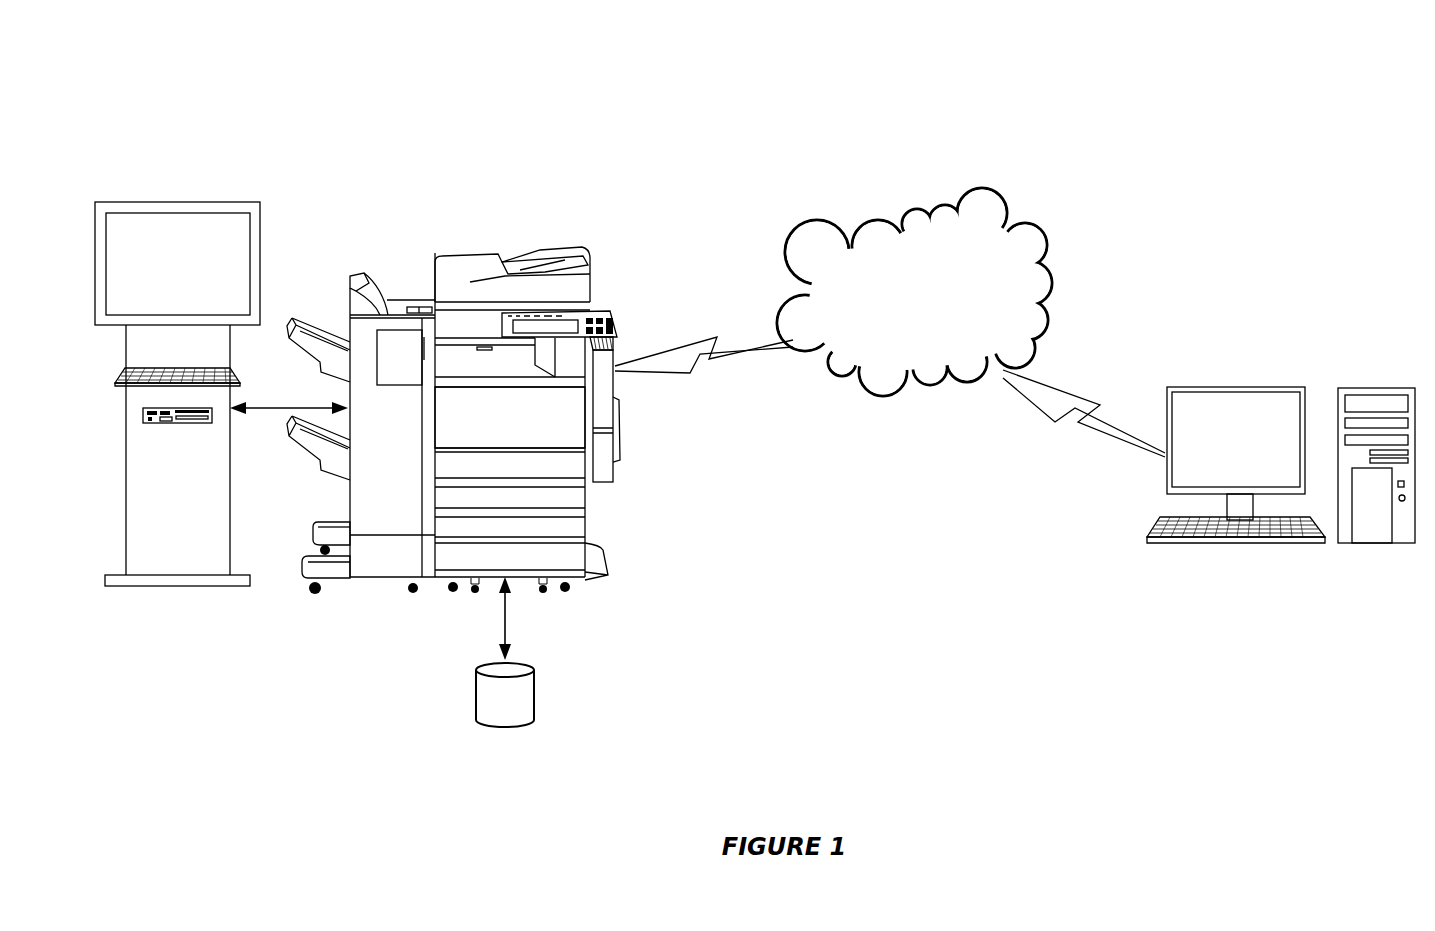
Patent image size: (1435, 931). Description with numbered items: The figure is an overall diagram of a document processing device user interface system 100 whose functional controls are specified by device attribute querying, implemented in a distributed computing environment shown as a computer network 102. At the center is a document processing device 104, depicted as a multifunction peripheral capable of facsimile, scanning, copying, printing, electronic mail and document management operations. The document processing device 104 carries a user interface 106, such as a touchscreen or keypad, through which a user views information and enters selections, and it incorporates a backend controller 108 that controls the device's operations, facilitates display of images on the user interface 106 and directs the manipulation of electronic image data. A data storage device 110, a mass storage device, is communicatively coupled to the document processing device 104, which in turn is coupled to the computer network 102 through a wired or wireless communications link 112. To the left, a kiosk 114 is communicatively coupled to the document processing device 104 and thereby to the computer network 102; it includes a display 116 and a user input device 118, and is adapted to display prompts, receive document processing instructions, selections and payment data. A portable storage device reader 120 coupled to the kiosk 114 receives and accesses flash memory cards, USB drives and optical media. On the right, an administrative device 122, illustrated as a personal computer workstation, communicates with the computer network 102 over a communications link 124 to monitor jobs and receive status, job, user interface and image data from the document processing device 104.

The document processing device user interface system 100 is at (709, 122).
The computer network 102 is at (981, 189).
The document processing device 104 is at (512, 259).
The user interface 106 is at (617, 323).
The controller 108 is at (577, 436).
The data storage device 110 is at (534, 677).
The communications link 112 is at (717, 337).
The kiosk 114 is at (142, 194).
The display 116 is at (235, 291).
The user input device 118 is at (122, 372).
The portable storage device reader 120 is at (142, 410).
The administrative device 122 is at (1252, 388).
The communications link 124 is at (1063, 388).